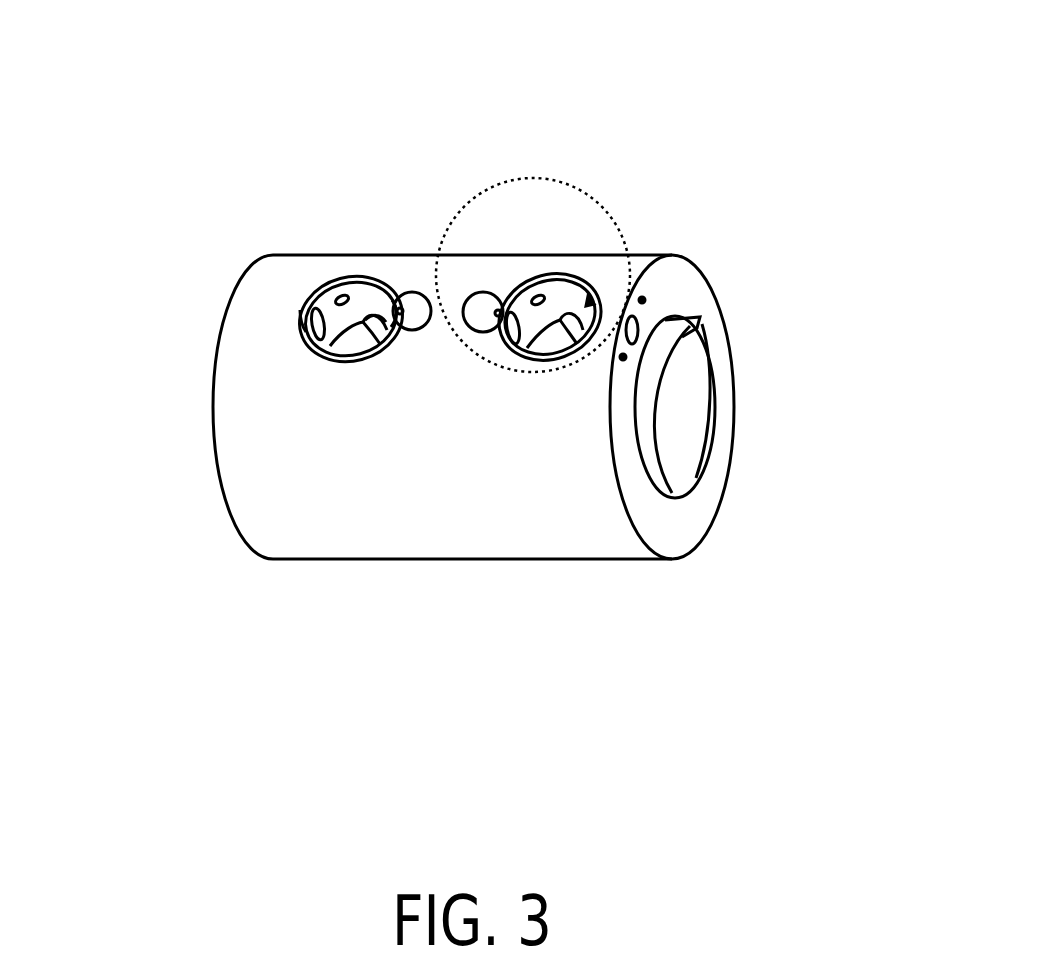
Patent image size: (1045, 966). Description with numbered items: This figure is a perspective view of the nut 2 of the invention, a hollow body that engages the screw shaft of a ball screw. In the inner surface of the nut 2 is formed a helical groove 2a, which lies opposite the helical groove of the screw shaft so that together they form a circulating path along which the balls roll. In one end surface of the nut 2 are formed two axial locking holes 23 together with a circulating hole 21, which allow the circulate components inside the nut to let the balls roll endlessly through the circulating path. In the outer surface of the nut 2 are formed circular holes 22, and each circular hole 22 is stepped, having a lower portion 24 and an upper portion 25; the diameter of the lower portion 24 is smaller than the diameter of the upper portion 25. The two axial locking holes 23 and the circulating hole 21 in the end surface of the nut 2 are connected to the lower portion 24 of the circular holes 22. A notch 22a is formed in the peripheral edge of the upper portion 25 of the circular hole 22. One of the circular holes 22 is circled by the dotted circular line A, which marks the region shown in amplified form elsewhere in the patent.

The nut 2 is at (187, 547).
The helical groove 2a is at (667, 468).
The circulating hole 21 is at (698, 320).
The circular hole 22 is at (348, 278).
The notch 22a is at (480, 335).
The axial locking hole 23 is at (645, 300).
The lower portion 24 is at (375, 293).
The upper portion 25 is at (300, 318).
The dotted circular line A is at (565, 183).